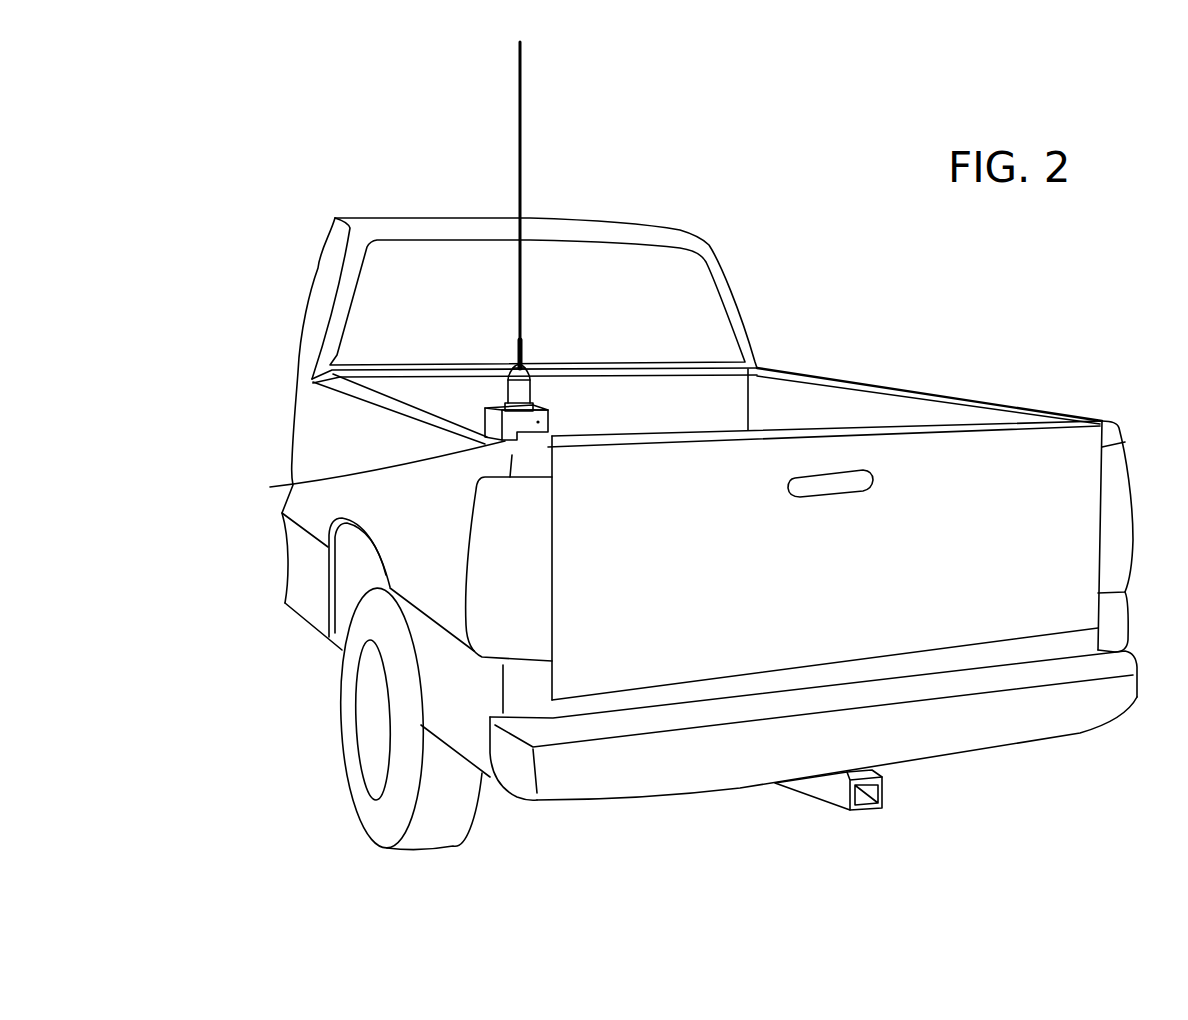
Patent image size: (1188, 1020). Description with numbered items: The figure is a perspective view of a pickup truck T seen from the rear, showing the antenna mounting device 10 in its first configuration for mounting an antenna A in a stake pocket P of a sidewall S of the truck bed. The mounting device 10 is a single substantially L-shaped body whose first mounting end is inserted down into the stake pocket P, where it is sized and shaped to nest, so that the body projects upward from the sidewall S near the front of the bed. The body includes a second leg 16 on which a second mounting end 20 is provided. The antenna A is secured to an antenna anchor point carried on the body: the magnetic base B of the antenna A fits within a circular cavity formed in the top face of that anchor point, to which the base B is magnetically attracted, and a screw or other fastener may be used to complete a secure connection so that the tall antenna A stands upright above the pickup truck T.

The antenna mounting device 10 is at (416, 277).
The second leg 16 is at (527, 422).
The second mounting end 20 is at (552, 420).
The antenna A is at (522, 163).
The magnetic base B is at (530, 403).
The sidewall S is at (410, 406).
The pickup truck T is at (748, 310).
The stake pocket P is at (292, 485).